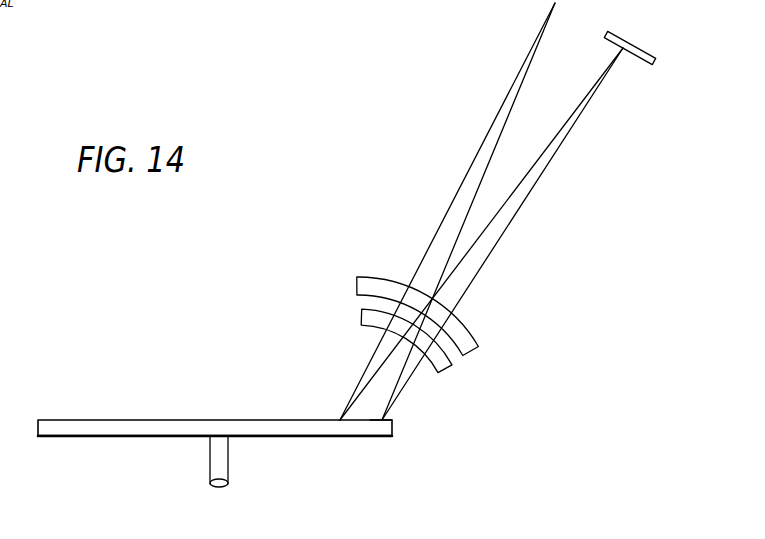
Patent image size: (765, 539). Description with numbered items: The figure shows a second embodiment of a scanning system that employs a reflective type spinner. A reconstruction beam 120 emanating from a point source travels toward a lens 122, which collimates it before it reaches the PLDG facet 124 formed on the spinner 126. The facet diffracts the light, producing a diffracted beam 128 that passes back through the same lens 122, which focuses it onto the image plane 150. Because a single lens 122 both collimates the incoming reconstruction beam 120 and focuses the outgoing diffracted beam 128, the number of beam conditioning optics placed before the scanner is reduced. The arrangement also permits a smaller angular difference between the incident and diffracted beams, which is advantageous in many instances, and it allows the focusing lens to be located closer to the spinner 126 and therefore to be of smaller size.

The reconstruction beam 120 is at (468, 170).
The lens 122 is at (466, 318).
The PLDG facet 124 is at (383, 418).
The spinner 126 is at (297, 420).
The diffracted beam 128 is at (522, 205).
The image plane 150 is at (637, 42).